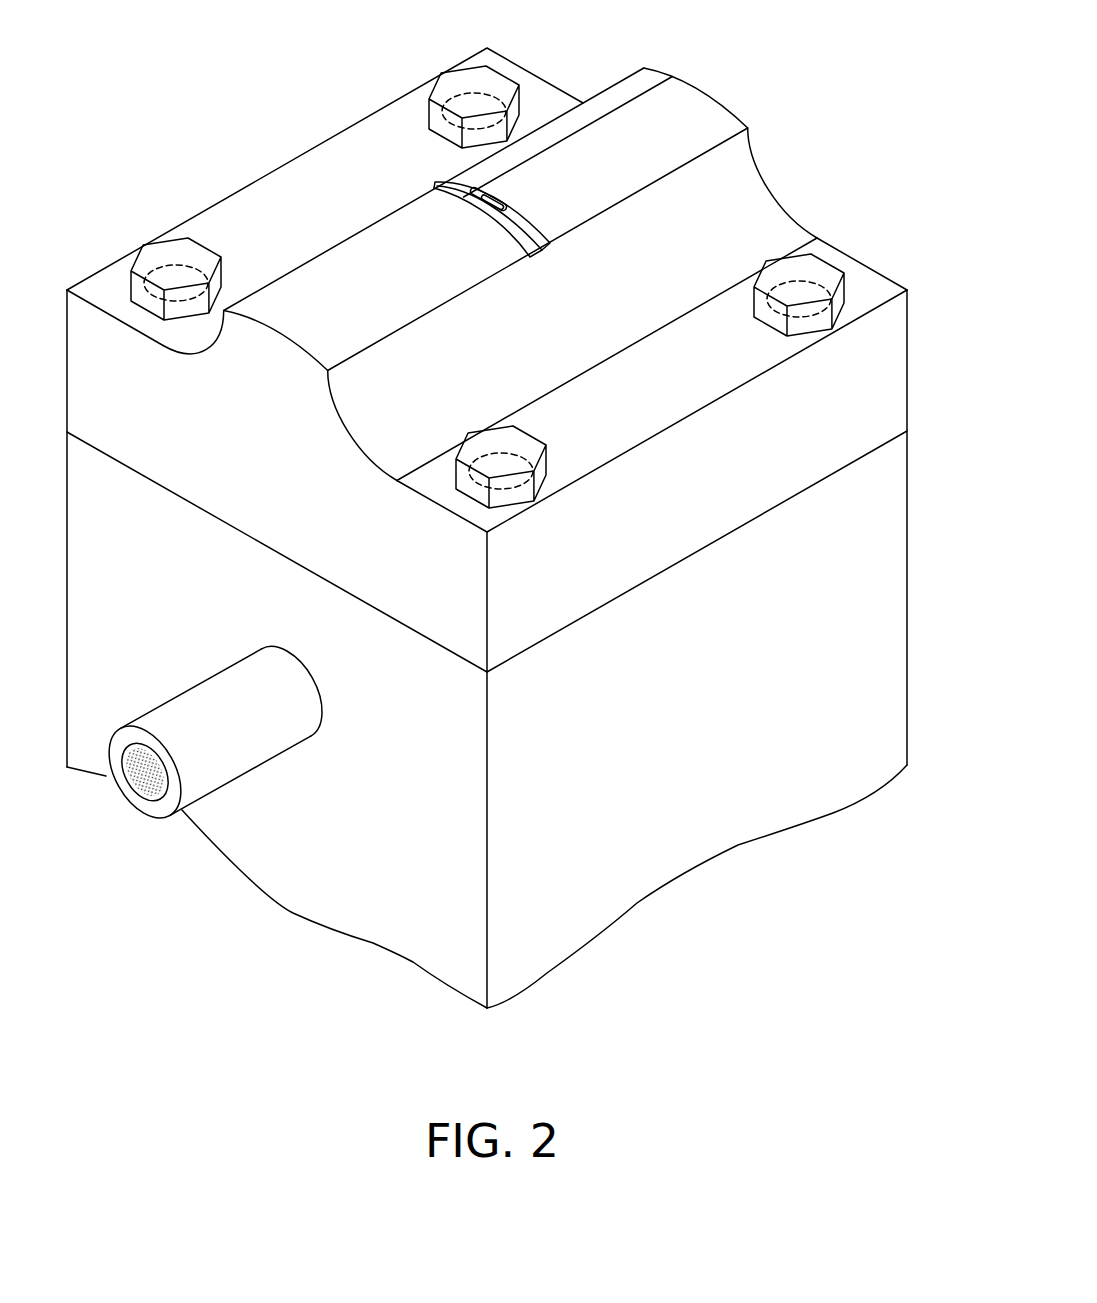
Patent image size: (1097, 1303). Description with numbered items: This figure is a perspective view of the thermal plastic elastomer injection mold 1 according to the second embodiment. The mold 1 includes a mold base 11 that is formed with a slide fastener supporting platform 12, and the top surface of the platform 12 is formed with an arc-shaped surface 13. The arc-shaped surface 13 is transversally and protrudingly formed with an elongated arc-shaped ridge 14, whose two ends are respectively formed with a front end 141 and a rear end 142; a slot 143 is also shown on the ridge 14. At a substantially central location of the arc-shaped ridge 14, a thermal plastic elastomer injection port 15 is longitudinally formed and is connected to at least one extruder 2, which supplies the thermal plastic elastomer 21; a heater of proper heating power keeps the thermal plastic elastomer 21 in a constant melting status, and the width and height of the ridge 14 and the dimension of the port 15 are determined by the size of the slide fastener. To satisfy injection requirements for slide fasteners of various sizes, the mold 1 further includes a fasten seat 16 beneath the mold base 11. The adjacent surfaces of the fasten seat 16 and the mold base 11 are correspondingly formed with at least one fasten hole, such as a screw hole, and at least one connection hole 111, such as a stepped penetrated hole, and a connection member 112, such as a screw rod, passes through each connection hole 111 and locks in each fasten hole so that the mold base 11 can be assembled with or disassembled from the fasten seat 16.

The thermal plastic elastomer injection mold 1 is at (105, 218).
The mold base 11 is at (205, 442).
The connection hole 111 is at (195, 262).
The connection member 112 is at (175, 250).
The slide fastener supporting platform 12 is at (548, 326).
The arc-shaped surface 13 is at (607, 157).
The arc-shaped ridge 14 is at (648, 70).
The front end 141 is at (433, 189).
The rear end 142 is at (518, 226).
The slot 143 is at (437, 183).
The thermal plastic elastomer injection port 15 is at (500, 200).
The fasten seat 16 is at (583, 851).
The extruder 2 is at (253, 757).
The thermal plastic elastomer 21 is at (142, 777).